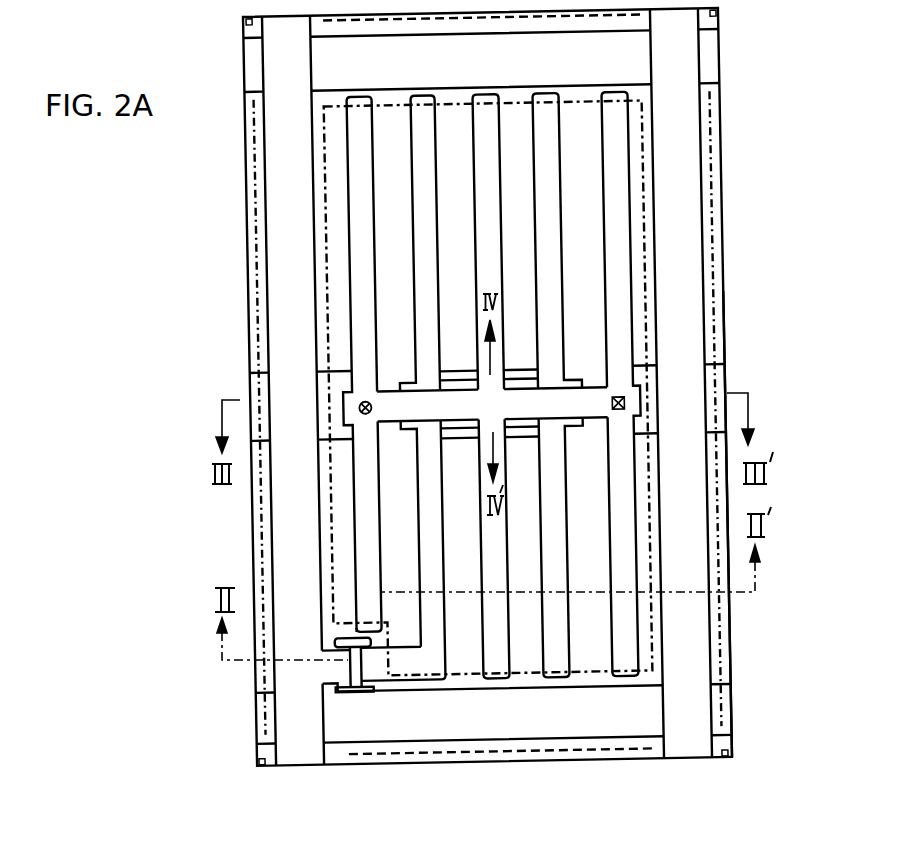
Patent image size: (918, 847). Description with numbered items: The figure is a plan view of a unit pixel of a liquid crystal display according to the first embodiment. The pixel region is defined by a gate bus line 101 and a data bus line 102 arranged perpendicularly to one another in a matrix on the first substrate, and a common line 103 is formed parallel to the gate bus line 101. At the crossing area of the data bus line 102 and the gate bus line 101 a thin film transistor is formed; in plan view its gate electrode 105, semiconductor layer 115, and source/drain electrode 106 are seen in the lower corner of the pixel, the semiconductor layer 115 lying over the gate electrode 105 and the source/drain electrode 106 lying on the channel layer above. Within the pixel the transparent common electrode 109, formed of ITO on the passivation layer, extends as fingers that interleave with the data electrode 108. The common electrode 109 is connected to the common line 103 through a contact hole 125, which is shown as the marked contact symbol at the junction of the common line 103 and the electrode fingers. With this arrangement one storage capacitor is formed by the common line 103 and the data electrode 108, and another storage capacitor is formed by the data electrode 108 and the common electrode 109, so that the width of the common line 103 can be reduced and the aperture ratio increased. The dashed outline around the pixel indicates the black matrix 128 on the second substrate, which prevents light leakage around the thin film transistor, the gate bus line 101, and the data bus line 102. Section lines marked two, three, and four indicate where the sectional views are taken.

The gate bus line 101 is at (718, 712).
The data bus line 102 is at (678, 742).
The common line 103 is at (713, 373).
The gate electrode 105 is at (360, 691).
The source/drain electrode 106 is at (325, 673).
The data electrode 108 is at (557, 662).
The common electrode 109 is at (495, 662).
The semiconductor layer 115 is at (336, 645).
The contact hole 125 is at (358, 408).
The black matrix 128 is at (723, 626).